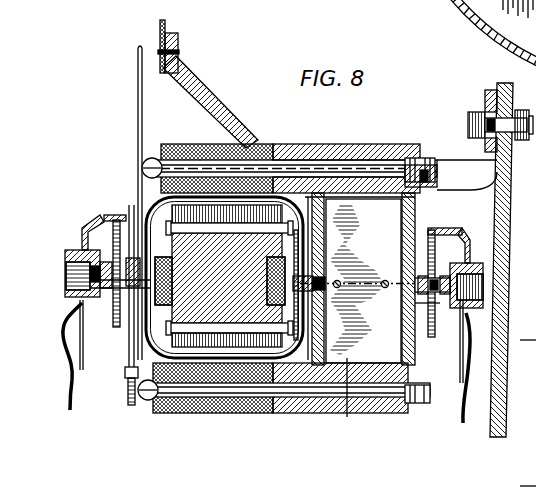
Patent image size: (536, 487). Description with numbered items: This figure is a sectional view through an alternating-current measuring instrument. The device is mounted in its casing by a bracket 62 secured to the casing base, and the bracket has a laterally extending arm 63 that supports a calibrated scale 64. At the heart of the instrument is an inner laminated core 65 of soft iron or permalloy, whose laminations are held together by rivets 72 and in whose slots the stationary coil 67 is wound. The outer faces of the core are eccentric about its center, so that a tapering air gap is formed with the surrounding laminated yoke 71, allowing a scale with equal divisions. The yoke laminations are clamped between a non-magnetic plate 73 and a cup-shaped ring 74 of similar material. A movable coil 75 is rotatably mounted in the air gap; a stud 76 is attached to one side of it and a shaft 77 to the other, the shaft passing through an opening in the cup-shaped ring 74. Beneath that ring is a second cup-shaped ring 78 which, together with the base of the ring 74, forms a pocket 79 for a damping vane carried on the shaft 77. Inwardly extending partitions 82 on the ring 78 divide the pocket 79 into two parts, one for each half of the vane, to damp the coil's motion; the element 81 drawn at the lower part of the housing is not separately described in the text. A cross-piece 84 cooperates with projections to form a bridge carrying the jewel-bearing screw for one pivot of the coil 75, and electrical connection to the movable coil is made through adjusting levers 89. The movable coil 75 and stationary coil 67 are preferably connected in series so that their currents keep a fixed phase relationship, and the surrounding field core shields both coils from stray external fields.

The bracket 62 is at (451, 163).
The laterally extending arm 63 is at (198, 90).
The calibrated scale 64 is at (162, 32).
The inner laminated core 65 is at (247, 343).
The stationary coil 67 is at (296, 247).
The laminated yoke 71 is at (214, 415).
The rivets 72 is at (148, 216).
The plate 73 is at (162, 413).
The cup-shaped ring 74 is at (300, 152).
The movable coil 75 is at (290, 385).
The stud 76 is at (131, 318).
The shaft 77 is at (340, 287).
The second cup-shaped ring 78 is at (345, 152).
The pocket 79 is at (357, 202).
The housing bottom 81 is at (347, 417).
The inwardly extending partitions 82 is at (525, 472).
The cross-piece 84 is at (104, 215).
The adjusting levers 89 is at (86, 228).